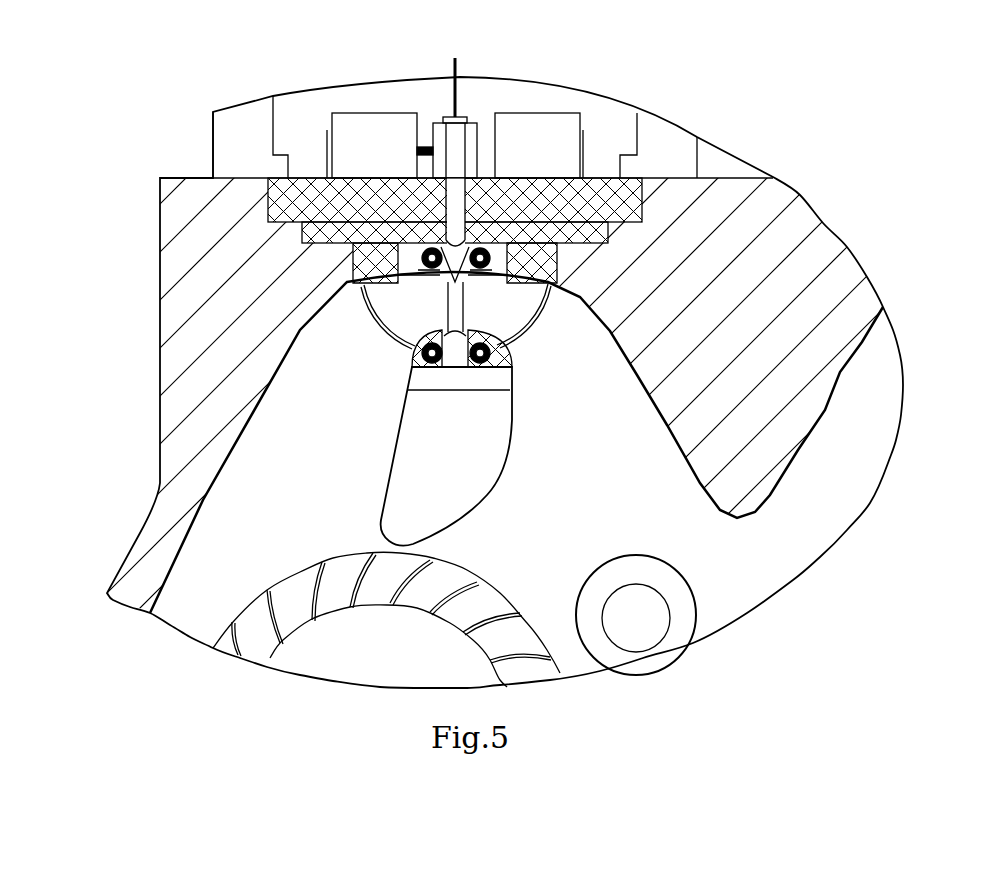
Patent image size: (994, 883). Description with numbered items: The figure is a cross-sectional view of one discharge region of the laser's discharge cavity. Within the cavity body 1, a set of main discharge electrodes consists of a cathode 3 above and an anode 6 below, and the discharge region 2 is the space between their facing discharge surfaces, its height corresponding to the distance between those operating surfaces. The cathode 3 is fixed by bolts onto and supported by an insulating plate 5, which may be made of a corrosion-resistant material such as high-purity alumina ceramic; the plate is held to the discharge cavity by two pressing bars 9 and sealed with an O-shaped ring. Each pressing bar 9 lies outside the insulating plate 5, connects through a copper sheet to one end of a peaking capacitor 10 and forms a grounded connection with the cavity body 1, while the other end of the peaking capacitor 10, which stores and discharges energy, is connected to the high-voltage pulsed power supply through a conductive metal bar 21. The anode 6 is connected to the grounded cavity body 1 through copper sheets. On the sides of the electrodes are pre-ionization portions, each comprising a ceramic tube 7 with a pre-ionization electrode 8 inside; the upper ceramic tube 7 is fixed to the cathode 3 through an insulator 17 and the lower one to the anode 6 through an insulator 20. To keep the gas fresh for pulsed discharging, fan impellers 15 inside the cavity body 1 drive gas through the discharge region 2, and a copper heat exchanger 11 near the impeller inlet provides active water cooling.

The cavity body 1 is at (237, 353).
The discharge region 2 is at (455, 306).
The cathode 3 is at (487, 237).
The insulating plate 5 is at (633, 180).
The anode 6 is at (437, 383).
The ceramic tube 7 is at (483, 377).
The pre-ionization electrode 8 is at (495, 282).
The pressing bar 9 is at (240, 148).
The peaking capacitor 10 is at (543, 137).
The heat exchanger 11 is at (677, 610).
The fan impeller 15 is at (290, 605).
The insulator 17 is at (377, 263).
The insulator 20 is at (503, 348).
The conductive metal bar 21 is at (427, 147).